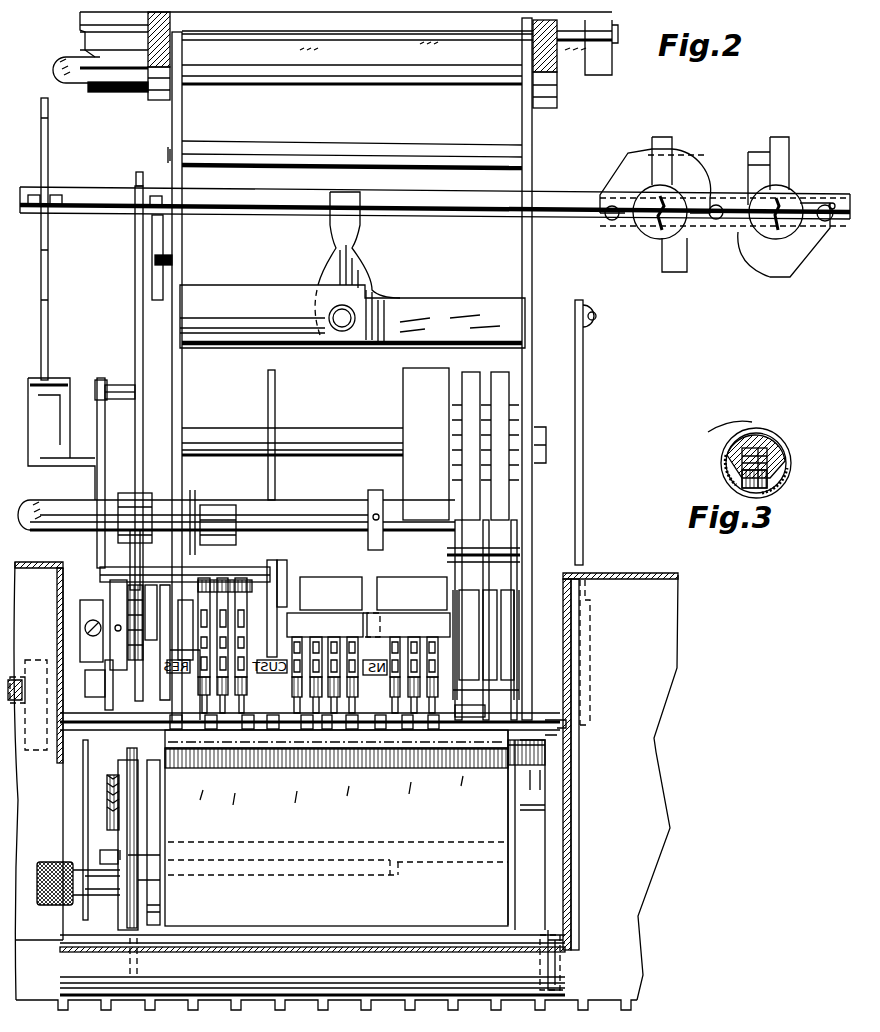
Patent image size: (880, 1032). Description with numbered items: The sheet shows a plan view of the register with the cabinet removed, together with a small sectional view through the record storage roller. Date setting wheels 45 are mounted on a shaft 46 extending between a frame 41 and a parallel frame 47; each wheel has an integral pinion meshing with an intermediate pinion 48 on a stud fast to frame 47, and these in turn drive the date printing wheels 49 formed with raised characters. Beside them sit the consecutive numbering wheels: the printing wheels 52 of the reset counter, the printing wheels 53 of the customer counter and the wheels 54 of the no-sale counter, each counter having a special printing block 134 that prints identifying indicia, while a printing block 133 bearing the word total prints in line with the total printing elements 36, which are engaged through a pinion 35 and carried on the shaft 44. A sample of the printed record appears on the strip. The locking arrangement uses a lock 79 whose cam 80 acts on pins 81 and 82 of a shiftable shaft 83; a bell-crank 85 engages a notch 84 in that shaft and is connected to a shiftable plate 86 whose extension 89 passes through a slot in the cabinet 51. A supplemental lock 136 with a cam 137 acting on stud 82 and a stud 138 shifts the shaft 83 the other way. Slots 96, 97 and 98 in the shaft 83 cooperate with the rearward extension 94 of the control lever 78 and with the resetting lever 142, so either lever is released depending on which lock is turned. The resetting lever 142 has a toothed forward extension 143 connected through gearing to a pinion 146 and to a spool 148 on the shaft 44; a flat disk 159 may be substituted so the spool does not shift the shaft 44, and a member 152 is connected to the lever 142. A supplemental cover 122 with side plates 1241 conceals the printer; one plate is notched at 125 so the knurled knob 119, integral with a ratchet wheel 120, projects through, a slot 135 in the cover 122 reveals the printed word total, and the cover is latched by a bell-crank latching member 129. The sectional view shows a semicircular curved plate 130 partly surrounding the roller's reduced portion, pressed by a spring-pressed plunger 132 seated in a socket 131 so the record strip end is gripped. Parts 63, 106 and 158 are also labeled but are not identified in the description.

In FIG. 2, the pinion 35 is at (298, 712).
In FIG. 2, the printing totalizer element 36 is at (270, 712).
In FIG. 2, the frame 41 is at (182, 245).
In FIG. 2, the shaft 44 is at (75, 715).
In FIG. 2, the date setting wheels 45 is at (496, 372).
In FIG. 2, the shaft 46 is at (368, 435).
In FIG. 2, the frame 47 is at (532, 382).
In FIG. 2, the intermediate pinion 48 is at (510, 590).
In FIG. 2, the printing wheels 49 is at (515, 635).
In FIG. 2, the cabinet 51 is at (611, 786).
In FIG. 2, the printing wheels 52 is at (243, 592).
In FIG. 2, the printing wheels 53 is at (355, 632).
In FIG. 2, the wheels 54 is at (415, 648).
In FIG. 2, the printed record 63 is at (245, 735).
In FIG. 2, the control lever 78 is at (58, 470).
In FIG. 2, the lock 79 is at (660, 212).
In FIG. 2, the cam 80 is at (655, 204).
In FIG. 2, the pin 81 is at (608, 220).
In FIG. 2, the pin 82 is at (714, 220).
In FIG. 2, the shiftable shaft 83 is at (437, 198).
In FIG. 2, the notch 84 is at (355, 200).
In FIG. 2, the bell-crank 85 is at (428, 305).
In FIG. 2, the shiftable plate 86 is at (583, 497).
In FIG. 2, the extension 89 is at (579, 790).
In FIG. 2, the rearward extension 94 is at (72, 257).
In FIG. 2, the slot 96 is at (30, 213).
In FIG. 2, the slot 97 is at (58, 213).
In FIG. 2, the notch 98 is at (152, 195).
In FIG. 2, the plate 106 is at (138, 540).
In FIG. 2, the knurled knob 119 is at (190, 822).
In FIG. 2, the ratchet wheel 120 is at (118, 915).
In FIG. 2, the supplemental cover 122 is at (322, 952).
In FIG. 2, the notch 125 is at (58, 778).
In FIG. 3, the latching member 129 is at (740, 472).
In FIG. 3, the curved plate 130 is at (783, 490).
In FIG. 3, the socket 131 is at (775, 445).
In FIG. 3, the spring-pressed plunger 132 is at (742, 480).
In FIG. 2, the printing block 133 is at (470, 720).
In FIG. 2, the special printing block 134 is at (200, 760).
In FIG. 2, the slot 135 is at (456, 952).
In FIG. 2, the supplemental lock 136 is at (775, 188).
In FIG. 2, the cam 137 is at (784, 240).
In FIG. 2, the stud 138 is at (822, 204).
In FIG. 2, the resetting lever 142 is at (135, 265).
In FIG. 2, the forward extension 143 is at (130, 552).
In FIG. 2, the pinion 146 is at (138, 622).
In FIG. 2, the spool 148 is at (83, 752).
In FIG. 2, the member 152 is at (102, 378).
In FIG. 2, the rack 158 is at (85, 820).
In FIG. 2, the flat disk 159 is at (120, 688).
In FIG. 2, the side plates 1241 is at (35, 955).